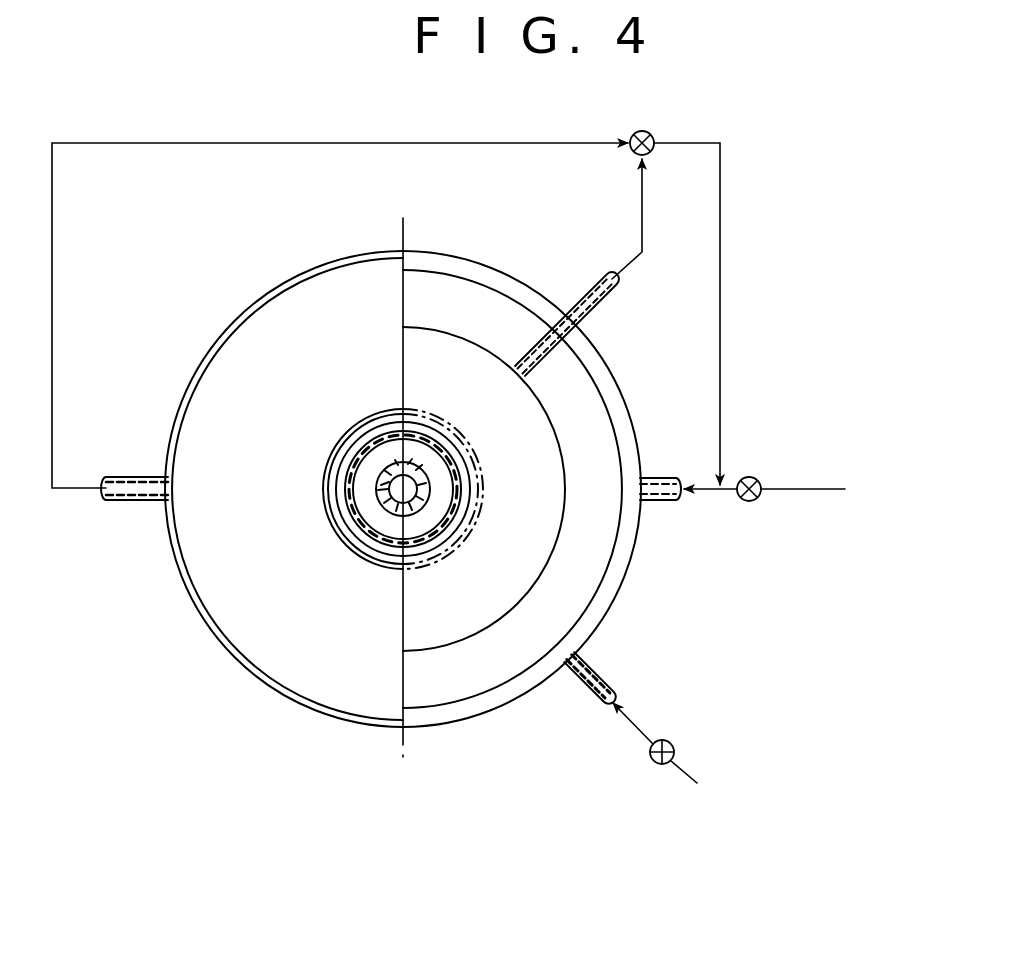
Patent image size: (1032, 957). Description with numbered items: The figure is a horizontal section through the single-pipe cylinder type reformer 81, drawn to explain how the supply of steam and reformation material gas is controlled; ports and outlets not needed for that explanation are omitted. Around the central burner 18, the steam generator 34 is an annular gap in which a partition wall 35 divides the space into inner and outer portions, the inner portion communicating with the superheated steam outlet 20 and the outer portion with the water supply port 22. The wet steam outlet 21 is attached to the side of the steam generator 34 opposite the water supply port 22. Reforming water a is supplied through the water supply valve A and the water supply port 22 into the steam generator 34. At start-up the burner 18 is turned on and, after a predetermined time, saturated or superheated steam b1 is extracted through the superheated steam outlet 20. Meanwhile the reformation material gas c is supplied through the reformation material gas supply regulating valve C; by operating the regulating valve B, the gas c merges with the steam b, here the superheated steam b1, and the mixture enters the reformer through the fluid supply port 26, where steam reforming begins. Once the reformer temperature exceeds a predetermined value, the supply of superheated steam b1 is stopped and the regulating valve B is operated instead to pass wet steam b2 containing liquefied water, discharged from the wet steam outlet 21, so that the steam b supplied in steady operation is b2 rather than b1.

The burner 18 is at (376, 494).
The superheated steam outlet 20 is at (590, 296).
The wet steam outlet 21 is at (115, 502).
The water supply port 22 is at (596, 668).
The fluid supply port 26 is at (665, 500).
The steam generator 34 is at (327, 390).
The partition wall 35 is at (343, 456).
The reformer 81 is at (297, 723).
The water supply valve A is at (672, 742).
The regulating valve B is at (653, 135).
The reformation material gas supply regulating valve C is at (749, 501).
The reforming water a is at (683, 770).
The saturated or superheated steam b1 is at (642, 216).
The wet steam b2 is at (52, 318).
The steam (b1 or b2) b is at (720, 327).
The reformation material gas c is at (820, 489).